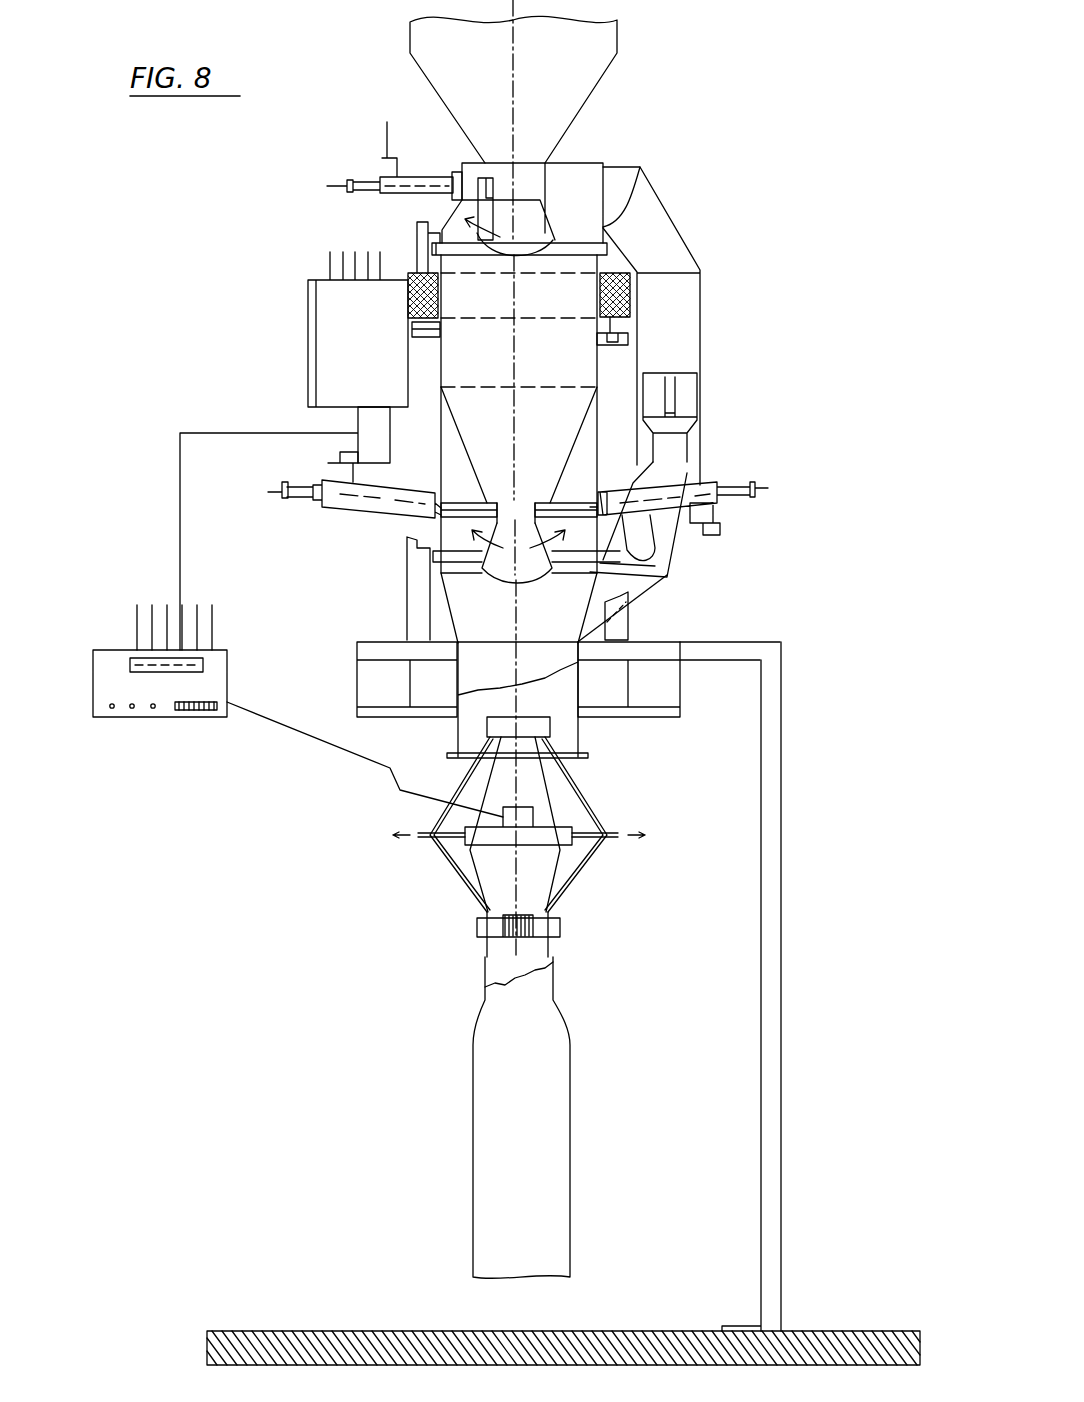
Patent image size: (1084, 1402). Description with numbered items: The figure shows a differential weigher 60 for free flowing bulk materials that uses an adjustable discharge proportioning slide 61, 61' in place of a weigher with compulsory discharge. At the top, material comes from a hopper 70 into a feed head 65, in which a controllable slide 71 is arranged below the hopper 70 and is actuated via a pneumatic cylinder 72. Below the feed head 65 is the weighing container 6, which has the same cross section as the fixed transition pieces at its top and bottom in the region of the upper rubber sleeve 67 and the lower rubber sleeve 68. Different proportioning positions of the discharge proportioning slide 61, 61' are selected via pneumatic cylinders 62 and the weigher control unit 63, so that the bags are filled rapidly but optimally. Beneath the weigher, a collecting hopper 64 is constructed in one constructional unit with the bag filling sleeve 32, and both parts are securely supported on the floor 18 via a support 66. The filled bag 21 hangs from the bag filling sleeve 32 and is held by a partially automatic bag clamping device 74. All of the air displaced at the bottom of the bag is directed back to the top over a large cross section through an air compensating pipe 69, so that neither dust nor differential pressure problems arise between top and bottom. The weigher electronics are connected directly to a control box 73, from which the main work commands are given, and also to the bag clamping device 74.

The hopper 70 is at (580, 40).
The feed head 65 is at (580, 172).
The controllable slide 71 is at (502, 213).
The pneumatic cylinder 72 is at (390, 188).
The rubber sleeve 67 is at (607, 227).
The air compensating pipe 69 is at (673, 248).
The differential weigher 60 is at (746, 320).
The weighing container 6 is at (596, 375).
The weigher control unit 63 is at (323, 322).
The pneumatic cylinders 62 is at (348, 512).
The discharge proportioning slide 61 is at (531, 572).
The discharge proportioning slide 61' is at (481, 598).
The rubber sleeve 68 is at (640, 580).
The collecting hopper 64 is at (640, 583).
The control box 73 is at (150, 717).
The bag filling sleeve 32 is at (582, 777).
The bag clamping device 74 is at (457, 878).
The support 66 is at (783, 880).
The bag 21 is at (521, 1117).
The floor 18 is at (315, 1330).